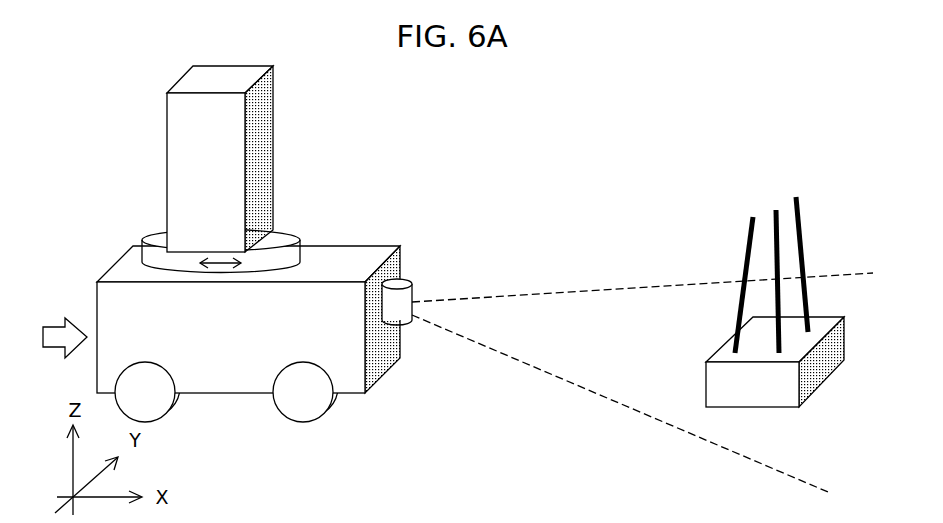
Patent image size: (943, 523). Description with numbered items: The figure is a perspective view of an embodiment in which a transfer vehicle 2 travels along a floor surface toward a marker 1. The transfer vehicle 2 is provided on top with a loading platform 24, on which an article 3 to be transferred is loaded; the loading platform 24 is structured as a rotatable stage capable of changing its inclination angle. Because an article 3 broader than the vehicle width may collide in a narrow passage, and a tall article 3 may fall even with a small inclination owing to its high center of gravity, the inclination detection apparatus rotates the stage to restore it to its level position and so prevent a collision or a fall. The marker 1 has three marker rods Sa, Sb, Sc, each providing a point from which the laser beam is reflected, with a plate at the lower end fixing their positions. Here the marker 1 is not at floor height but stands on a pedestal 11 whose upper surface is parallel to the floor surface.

The marker 1 is at (740, 294).
The transfer vehicle 2 is at (398, 247).
The article 3 is at (272, 67).
The pedestal 11 is at (702, 372).
The loading platform 24 is at (298, 235).
The marker rod Sa is at (747, 273).
The marker rod Sb is at (778, 267).
The marker rod Sc is at (811, 252).